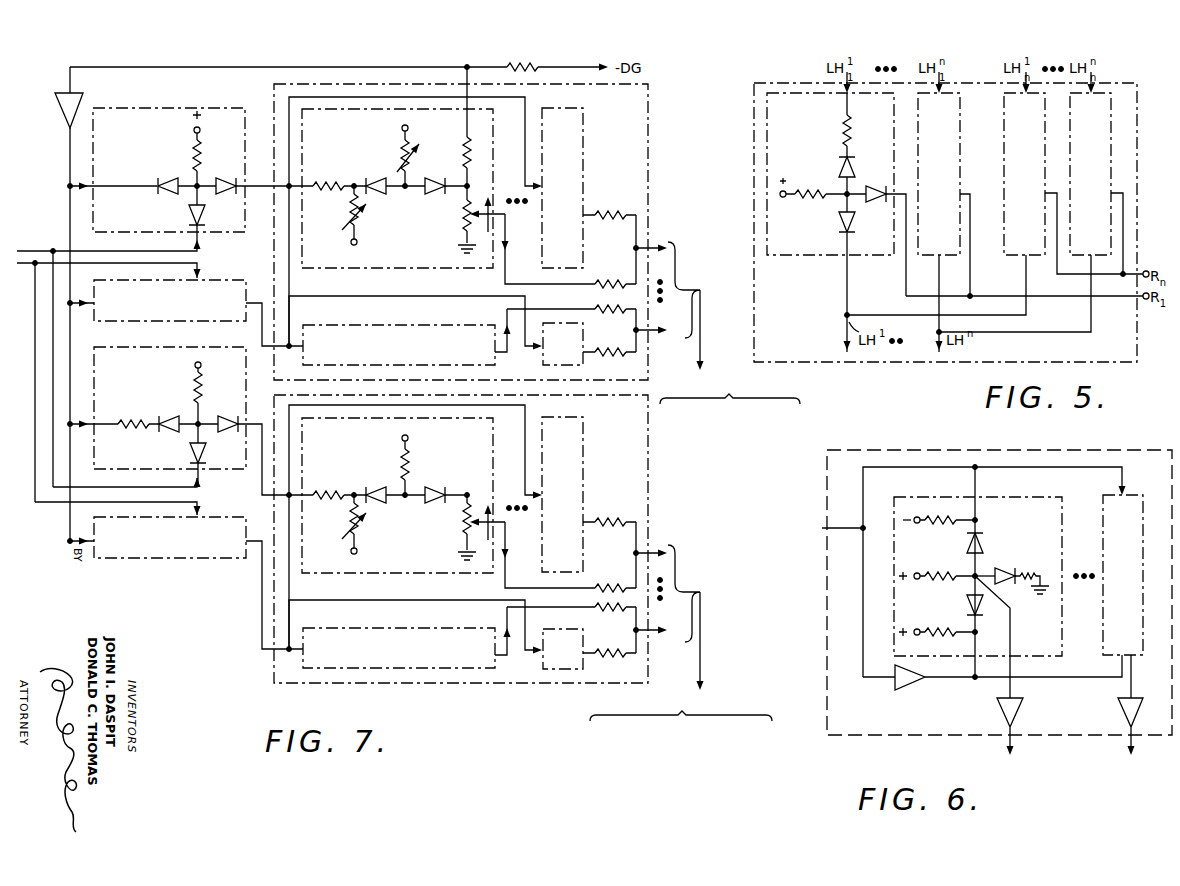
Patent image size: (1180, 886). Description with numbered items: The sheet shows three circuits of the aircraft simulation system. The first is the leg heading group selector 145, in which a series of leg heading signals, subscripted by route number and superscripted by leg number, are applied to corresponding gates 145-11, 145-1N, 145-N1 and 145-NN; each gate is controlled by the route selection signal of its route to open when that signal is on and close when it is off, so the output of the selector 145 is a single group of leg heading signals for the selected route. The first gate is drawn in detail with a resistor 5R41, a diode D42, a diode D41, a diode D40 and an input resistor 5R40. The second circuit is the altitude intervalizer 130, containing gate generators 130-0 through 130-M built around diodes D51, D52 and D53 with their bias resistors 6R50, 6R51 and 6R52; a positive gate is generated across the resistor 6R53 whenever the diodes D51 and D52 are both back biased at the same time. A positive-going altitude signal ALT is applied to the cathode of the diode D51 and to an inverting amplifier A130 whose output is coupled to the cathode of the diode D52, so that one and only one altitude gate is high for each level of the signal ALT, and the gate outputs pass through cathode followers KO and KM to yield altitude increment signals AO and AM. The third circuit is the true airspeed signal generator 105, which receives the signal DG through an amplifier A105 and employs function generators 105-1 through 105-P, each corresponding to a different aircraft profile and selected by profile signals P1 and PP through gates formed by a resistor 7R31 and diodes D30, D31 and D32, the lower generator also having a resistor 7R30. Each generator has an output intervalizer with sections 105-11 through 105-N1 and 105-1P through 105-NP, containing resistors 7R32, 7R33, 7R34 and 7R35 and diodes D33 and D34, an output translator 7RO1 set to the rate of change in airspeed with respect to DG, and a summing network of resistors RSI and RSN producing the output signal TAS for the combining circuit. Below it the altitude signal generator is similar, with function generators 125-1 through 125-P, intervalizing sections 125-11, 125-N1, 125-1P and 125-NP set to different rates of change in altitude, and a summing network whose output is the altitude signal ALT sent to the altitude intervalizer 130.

In FIG. 7, the amplifier A105 is at (54, 103).
In FIG. 7, the integrator output signal DG is at (171, 186).
In FIG. 7, the function generator 105-1 is at (108, 108).
In FIG. 7, the resistor R31 7R31 is at (192, 139).
In FIG. 7, the diode D30 is at (168, 177).
In FIG. 7, the diode D31 is at (220, 176).
In FIG. 7, the diode D32 is at (188, 217).
In FIG. 7, the profile signal P1 is at (122, 365).
In FIG. 7, the profile signal PP is at (121, 386).
In FIG. 7, the function generator 105-P is at (113, 323).
In FIG. 7, the function generator 125-1 is at (97, 470).
In FIG. 7, the resistor R30 7R30 is at (132, 422).
In FIG. 7, the function generator 125-P is at (168, 559).
In FIG. 7, the true airspeed signal generator 105 is at (652, 134).
In FIG. 7, the output intervalizer section 105-11 is at (360, 268).
In FIG. 7, the resistor R32 7R32 is at (328, 181).
In FIG. 7, the variable resistor R33 7R33 is at (342, 216).
In FIG. 7, the variable resistor R34 7R34 is at (400, 165).
In FIG. 7, the resistor R35 7R35 is at (465, 160).
In FIG. 7, the diode D33 is at (372, 200).
In FIG. 7, the diode D34 is at (436, 194).
In FIG. 7, the output translator section 7RO1 is at (462, 226).
In FIG. 7, the summing network resistor RSI is at (620, 616).
In FIG. 7, the summing network resistor RSN is at (609, 467).
In FIG. 7, the output intervalizer section 105-N1 is at (552, 116).
In FIG. 7, the gating stage 105-1P is at (360, 326).
In FIG. 7, the gating stage 105-NP is at (574, 364).
In FIG. 7, the true airspeed signal TAS is at (729, 339).
In FIG. 7, the output intervalizing section 125-11 is at (360, 573).
In FIG. 7, the output intervalizing section 125-N1 is at (580, 444).
In FIG. 7, the gating stage 125-1P is at (376, 686).
In FIG. 7, the gating stage 125-NP is at (548, 671).
In FIG. 7, the altitude signal ALT is at (681, 649).
In FIG. 6, the altitude signal ALT is at (825, 528).
In FIG. 5, the leg heading group selector 145 is at (770, 366).
In FIG. 5, the leg heading gate 145-11 is at (832, 262).
In FIG. 5, the leg heading gate 145-1N is at (928, 262).
In FIG. 5, the leg heading gate 145-N1 is at (1012, 257).
In FIG. 5, the leg heading gate 145-NN is at (1080, 257).
In FIG. 5, the resistor R41 5R41 is at (840, 137).
In FIG. 5, the diode D42 is at (837, 168).
In FIG. 5, the diode D40 is at (855, 217).
In FIG. 5, the resistor R40 5R40 is at (806, 196).
In FIG. 5, the diode D41 is at (864, 192).
In FIG. 6, the altitude intervalizer 130 is at (890, 735).
In FIG. 6, the inverting amplifier A130 is at (890, 685).
In FIG. 6, the gate generator 130-0 is at (969, 676).
In FIG. 6, the gate generator 130-M is at (1110, 658).
In FIG. 6, the resistor R50 6R50 is at (946, 527).
In FIG. 6, the resistor R51 6R51 is at (948, 581).
In FIG. 6, the resistor R52 6R52 is at (955, 640).
In FIG. 6, the gate output resistor 6R53 is at (1030, 574).
In FIG. 6, the diode D51 is at (988, 540).
In FIG. 6, the diode D52 is at (982, 614).
In FIG. 6, the diode D53 is at (1006, 586).
In FIG. 6, the cathode follower KO is at (1014, 710).
In FIG. 6, the cathode follower KM is at (1137, 710).
In FIG. 6, the altitude increment signal AO is at (1006, 777).
In FIG. 6, the altitude increment signal AM is at (1125, 777).